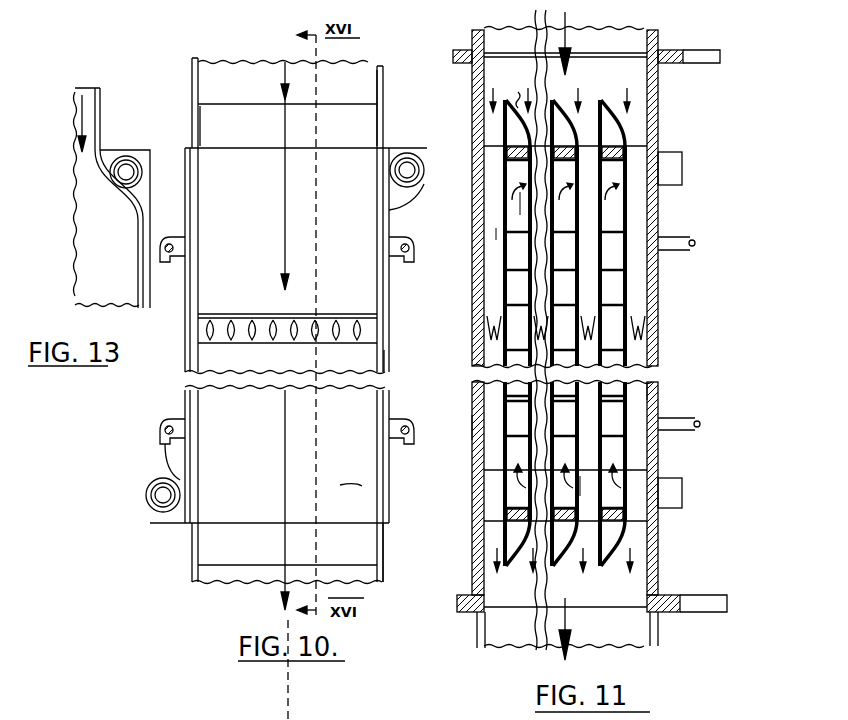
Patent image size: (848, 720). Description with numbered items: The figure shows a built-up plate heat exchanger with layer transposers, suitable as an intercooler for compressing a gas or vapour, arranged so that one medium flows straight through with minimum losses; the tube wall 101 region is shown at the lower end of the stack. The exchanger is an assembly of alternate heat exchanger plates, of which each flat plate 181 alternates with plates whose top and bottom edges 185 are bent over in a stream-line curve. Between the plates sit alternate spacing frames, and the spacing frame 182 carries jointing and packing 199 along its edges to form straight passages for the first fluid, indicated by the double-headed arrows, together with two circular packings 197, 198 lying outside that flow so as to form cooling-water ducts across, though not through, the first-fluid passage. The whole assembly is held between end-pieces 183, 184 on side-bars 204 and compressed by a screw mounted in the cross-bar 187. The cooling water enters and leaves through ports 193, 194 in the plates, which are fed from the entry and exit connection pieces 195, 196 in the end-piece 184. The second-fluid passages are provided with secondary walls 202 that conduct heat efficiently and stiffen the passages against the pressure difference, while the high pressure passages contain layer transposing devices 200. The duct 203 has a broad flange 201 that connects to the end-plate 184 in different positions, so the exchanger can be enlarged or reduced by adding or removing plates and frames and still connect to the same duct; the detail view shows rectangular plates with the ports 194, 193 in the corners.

In FIG. 10, the tube wall 101 is at (385, 548).
In FIG. 10, the heat exchanger plate 181 is at (352, 487).
In FIG. 11, the heat exchanger plate 181 is at (497, 230).
In FIG. 10, the spacing frame 182 is at (383, 325).
In FIG. 11, the spacing frame 182 is at (622, 146).
In FIG. 10, the end-piece 183 is at (371, 715).
In FIG. 11, the end-piece 183 is at (478, 428).
In FIG. 11, the end-piece 184 is at (660, 395).
In FIG. 10, the top and bottom edges 185 is at (220, 127).
In FIG. 11, the top and bottom edges 185 is at (714, 562).
In FIG. 11, the cross-bar 187 is at (528, 214).
In FIG. 10, the entry and exit port 193 is at (163, 495).
In FIG. 13, the entry and exit port 194 is at (130, 171).
In FIG. 10, the entry and exit port 194 is at (408, 168).
In FIG. 11, the entry and exit connection piece 195 is at (673, 166).
In FIG. 11, the entry and exit connection piece 196 is at (666, 498).
In FIG. 10, the circular packing 197 is at (160, 480).
In FIG. 11, the circular packing 197 is at (630, 486).
In FIG. 13, the circular packing 198 is at (137, 184).
In FIG. 10, the circular packing 198 is at (415, 182).
In FIG. 11, the circular packing 198 is at (634, 176).
In FIG. 13, the jointing and packing 199 is at (128, 218).
In FIG. 10, the jointing and packing 199 is at (378, 356).
In FIG. 10, the layer transposing device 200 is at (326, 330).
In FIG. 11, the layer transposing device 200 is at (660, 322).
In FIG. 13, the flange 201 is at (100, 113).
In FIG. 10, the flange 201 is at (384, 123).
In FIG. 11, the flange 201 is at (712, 63).
In FIG. 11, the secondary wall 202 is at (613, 285).
In FIG. 11, the duct 203 is at (648, 34).
In FIG. 10, the side-bar 204 is at (403, 255).
In FIG. 11, the side-bar 204 is at (696, 243).